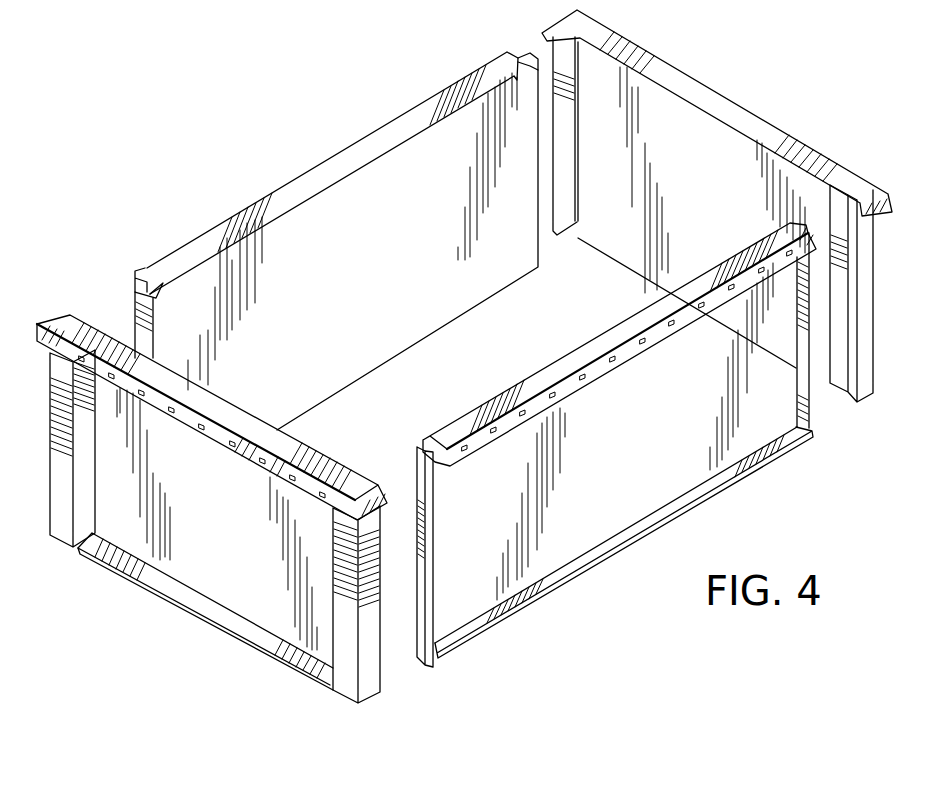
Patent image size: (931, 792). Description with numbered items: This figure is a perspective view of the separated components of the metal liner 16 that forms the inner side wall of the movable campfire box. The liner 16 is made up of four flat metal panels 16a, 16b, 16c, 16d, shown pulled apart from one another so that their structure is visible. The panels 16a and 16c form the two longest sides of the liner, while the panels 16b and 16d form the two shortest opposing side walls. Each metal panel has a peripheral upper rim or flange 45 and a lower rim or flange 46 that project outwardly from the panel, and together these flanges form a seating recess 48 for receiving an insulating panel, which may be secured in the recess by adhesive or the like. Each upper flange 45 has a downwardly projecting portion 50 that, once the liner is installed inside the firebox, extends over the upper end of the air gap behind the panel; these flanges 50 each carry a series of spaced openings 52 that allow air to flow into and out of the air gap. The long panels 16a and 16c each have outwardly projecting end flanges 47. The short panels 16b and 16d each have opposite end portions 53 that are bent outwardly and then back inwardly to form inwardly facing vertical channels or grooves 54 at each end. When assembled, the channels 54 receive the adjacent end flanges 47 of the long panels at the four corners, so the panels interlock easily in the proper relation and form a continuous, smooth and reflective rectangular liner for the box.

The inner wall or liner 16 is at (287, 170).
The flat metal panel 16a is at (425, 312).
The flat metal panel 16b is at (708, 132).
The flat metal panel 16c is at (740, 470).
The flat metal panel 16d is at (200, 552).
The upper rim or flange 45 is at (382, 137).
The lower rim or flange 46 is at (577, 567).
The end flange 47 is at (526, 52).
The seating recess 48 is at (630, 480).
The downwardly projecting portion 50 is at (135, 279).
The spaced openings 52 is at (202, 427).
The end portions 53 is at (865, 332).
The vertical channels or grooves 54 is at (567, 218).